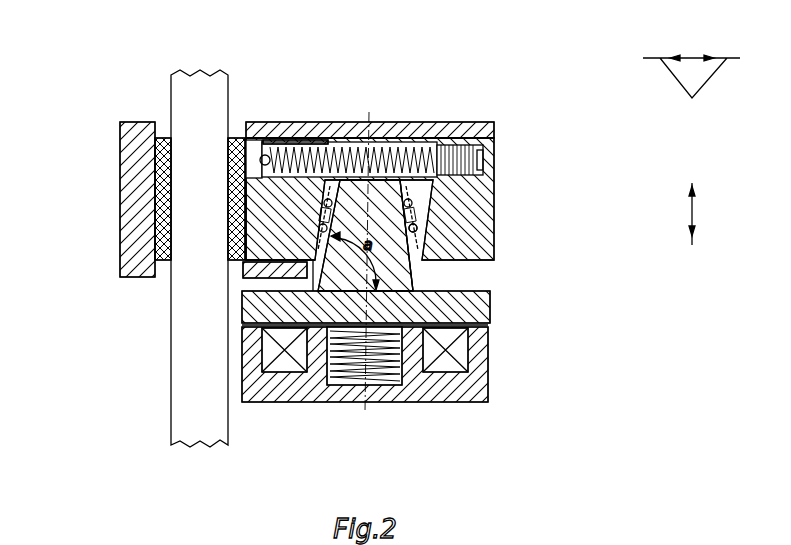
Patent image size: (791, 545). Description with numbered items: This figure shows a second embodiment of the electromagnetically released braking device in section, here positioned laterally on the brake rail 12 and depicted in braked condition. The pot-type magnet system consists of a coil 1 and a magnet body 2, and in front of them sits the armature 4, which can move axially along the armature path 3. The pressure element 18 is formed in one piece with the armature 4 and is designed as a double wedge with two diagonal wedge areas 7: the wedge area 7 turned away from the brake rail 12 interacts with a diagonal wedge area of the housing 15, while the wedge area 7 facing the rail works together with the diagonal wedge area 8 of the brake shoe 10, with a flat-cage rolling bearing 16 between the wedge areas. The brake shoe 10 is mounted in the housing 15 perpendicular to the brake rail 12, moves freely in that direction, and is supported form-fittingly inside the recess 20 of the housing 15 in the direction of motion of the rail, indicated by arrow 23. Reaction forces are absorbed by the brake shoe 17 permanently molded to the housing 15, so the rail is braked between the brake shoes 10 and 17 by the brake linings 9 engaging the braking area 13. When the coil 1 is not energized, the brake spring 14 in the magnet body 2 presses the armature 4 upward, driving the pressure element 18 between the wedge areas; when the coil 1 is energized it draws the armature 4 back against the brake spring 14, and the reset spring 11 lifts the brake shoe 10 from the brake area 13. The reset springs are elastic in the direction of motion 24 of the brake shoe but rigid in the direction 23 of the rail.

The coil 1 is at (452, 367).
The magnet body 2 is at (422, 393).
The armature path 3 is at (487, 327).
The armature 4 is at (480, 308).
The wedge area 7 is at (414, 268).
The wedge area 8 is at (255, 281).
The brake lining 9 is at (160, 137).
The brake shoe 10 is at (318, 137).
The reset spring 11 is at (396, 152).
The brake rail 12 is at (185, 412).
The braking area 13 is at (231, 207).
The brake spring 14 is at (333, 383).
The housing 15 is at (468, 133).
The flat-cage rolling bearing 16 is at (418, 210).
The brake shoe 17 is at (138, 250).
The pressure element 18 is at (399, 279).
The recess 20 is at (282, 140).
The arrow 23 is at (692, 214).
The direction of motion 24 is at (691, 94).